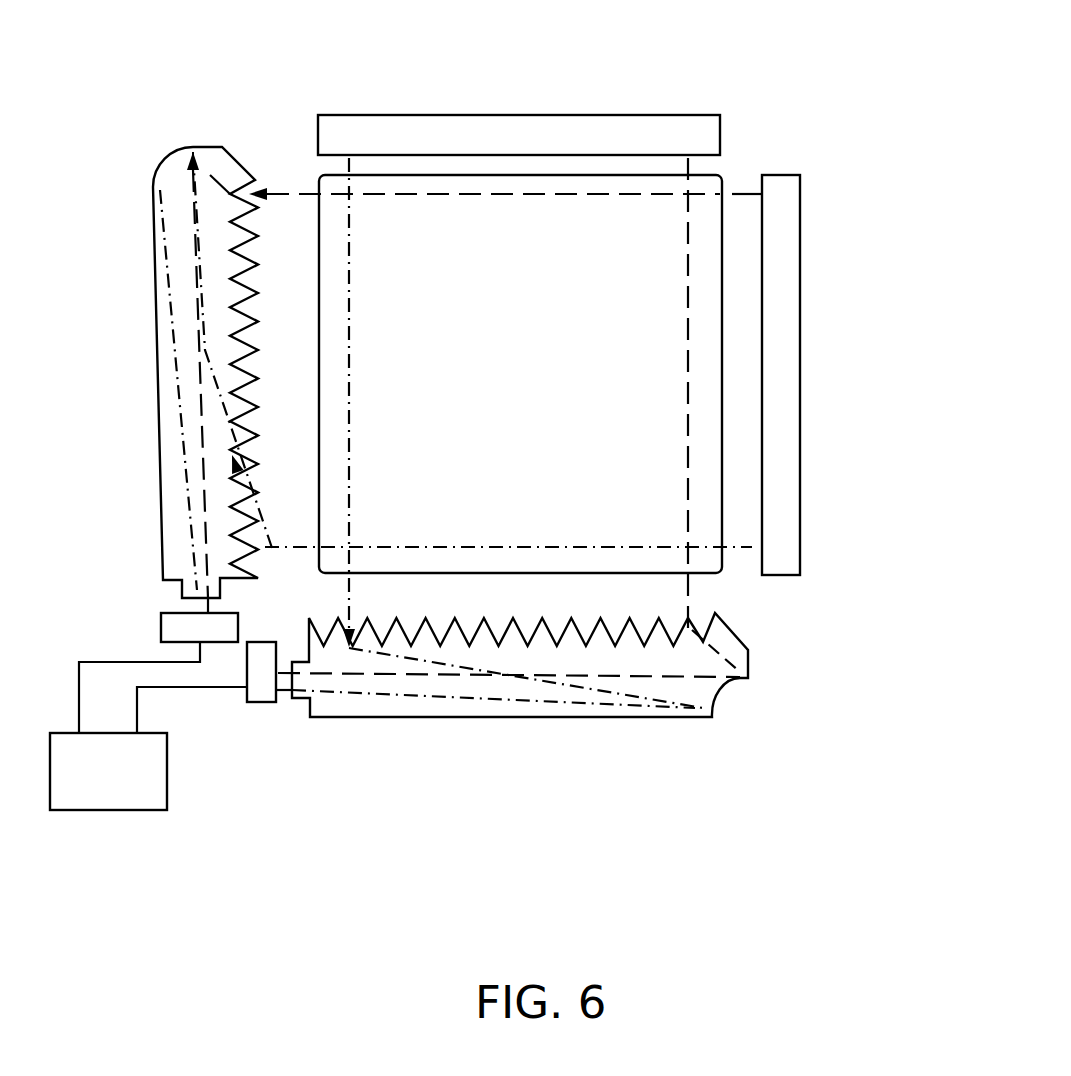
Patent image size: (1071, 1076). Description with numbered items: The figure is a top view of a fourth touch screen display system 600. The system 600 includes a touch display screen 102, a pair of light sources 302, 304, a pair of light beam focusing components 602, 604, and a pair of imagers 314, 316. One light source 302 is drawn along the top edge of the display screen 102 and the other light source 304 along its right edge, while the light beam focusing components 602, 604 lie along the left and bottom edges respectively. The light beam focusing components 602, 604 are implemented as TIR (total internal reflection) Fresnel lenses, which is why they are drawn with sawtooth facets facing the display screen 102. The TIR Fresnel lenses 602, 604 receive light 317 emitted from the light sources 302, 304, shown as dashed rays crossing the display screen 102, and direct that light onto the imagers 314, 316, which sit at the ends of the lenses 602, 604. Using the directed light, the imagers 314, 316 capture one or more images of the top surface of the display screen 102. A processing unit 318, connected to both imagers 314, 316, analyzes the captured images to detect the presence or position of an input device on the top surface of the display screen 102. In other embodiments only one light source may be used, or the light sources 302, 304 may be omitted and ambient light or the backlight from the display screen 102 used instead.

The touch screen display system 600 is at (828, 720).
The light source 302 is at (517, 96).
The touch display screen 102 is at (555, 405).
The light 317 is at (370, 294).
The light source 304 is at (822, 377).
The light beam focusing component 602 is at (138, 403).
The light beam focusing component 604 is at (600, 737).
The imager 314 is at (141, 628).
The imager 316 is at (261, 722).
The processing unit 318 is at (137, 789).